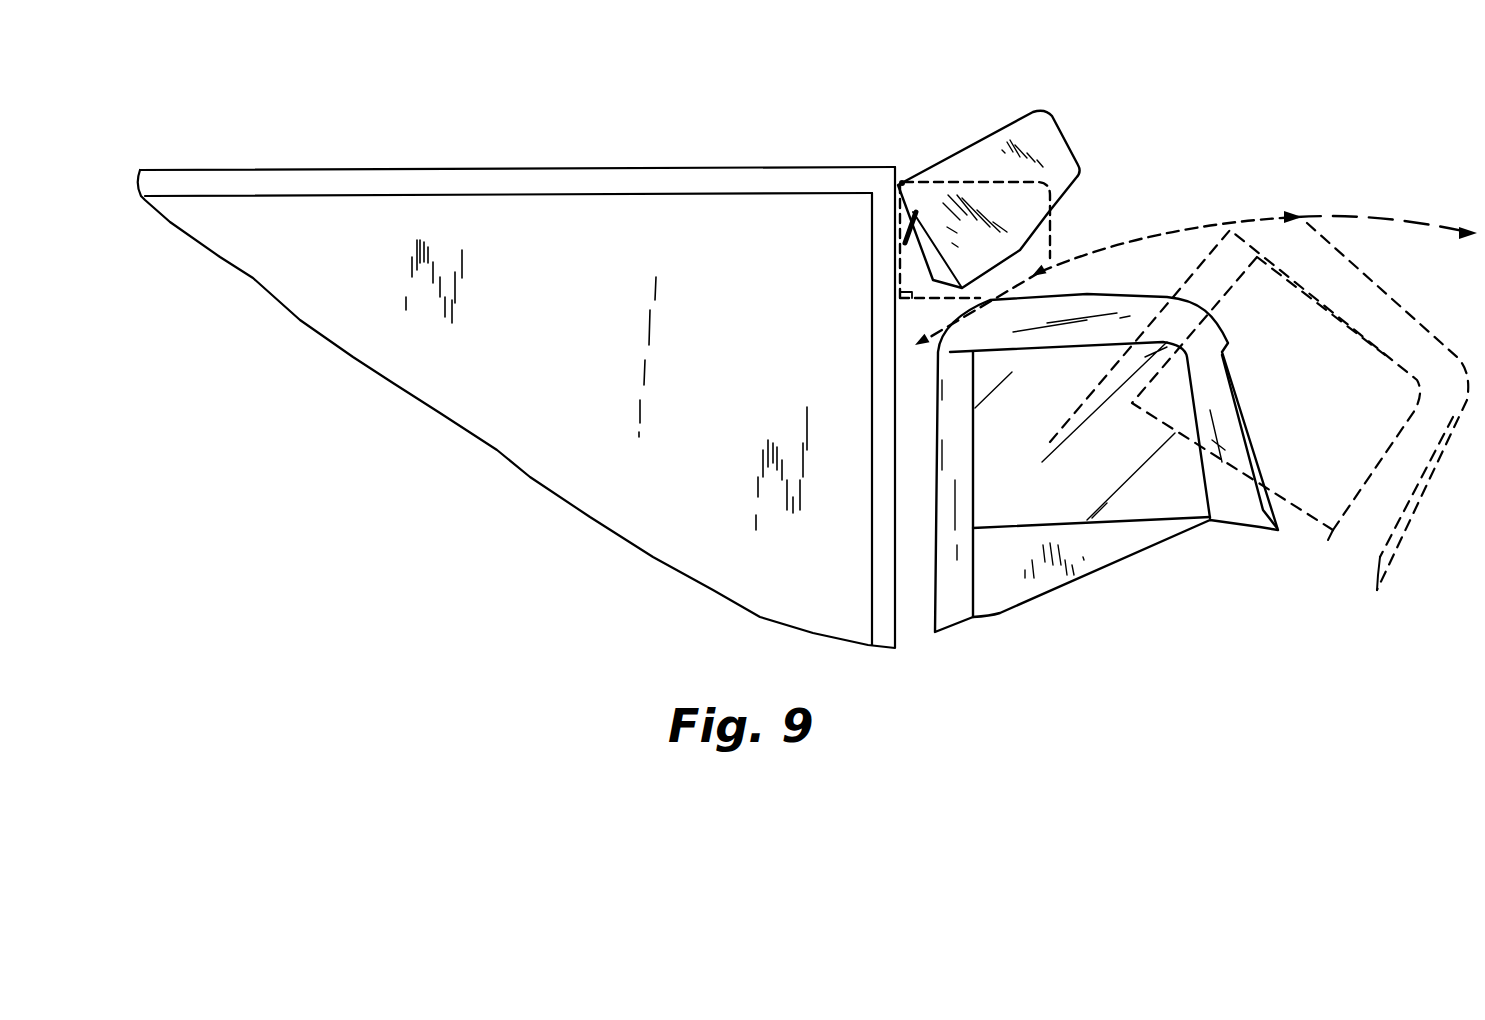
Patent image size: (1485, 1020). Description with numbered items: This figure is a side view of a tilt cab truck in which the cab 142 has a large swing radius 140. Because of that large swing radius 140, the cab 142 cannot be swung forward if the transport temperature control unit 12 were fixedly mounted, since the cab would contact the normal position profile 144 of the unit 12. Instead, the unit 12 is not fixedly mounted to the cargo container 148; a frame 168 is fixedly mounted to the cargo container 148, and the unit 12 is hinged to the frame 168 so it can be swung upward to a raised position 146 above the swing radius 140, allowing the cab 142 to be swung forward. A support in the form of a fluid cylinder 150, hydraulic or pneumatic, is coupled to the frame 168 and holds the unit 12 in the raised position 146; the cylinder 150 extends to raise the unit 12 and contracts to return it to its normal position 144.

The transport temperature control unit 12 is at (931, 162).
The large swing radius 140 is at (1277, 213).
The cab 142 is at (1253, 415).
The normal position profile 144 is at (1052, 245).
The raised position 146 is at (1015, 113).
The cargo container 148 is at (750, 166).
The fluid cylinder 150 is at (900, 242).
The frame 168 is at (903, 298).